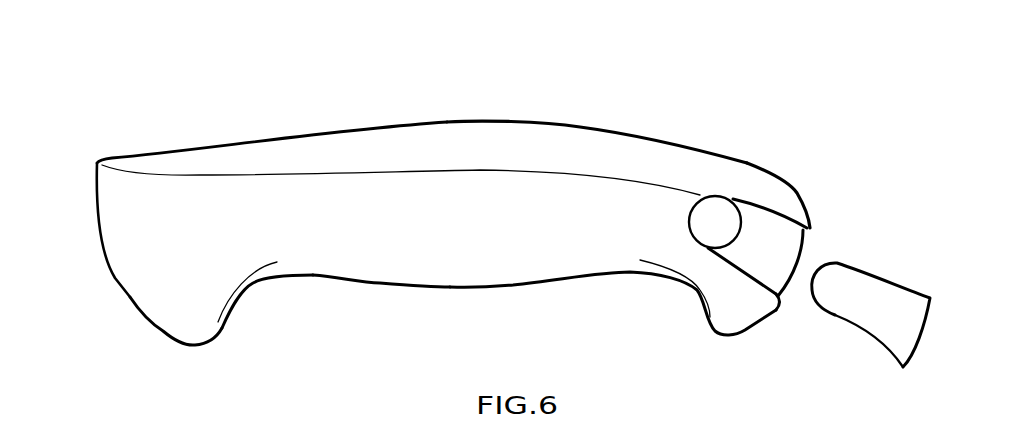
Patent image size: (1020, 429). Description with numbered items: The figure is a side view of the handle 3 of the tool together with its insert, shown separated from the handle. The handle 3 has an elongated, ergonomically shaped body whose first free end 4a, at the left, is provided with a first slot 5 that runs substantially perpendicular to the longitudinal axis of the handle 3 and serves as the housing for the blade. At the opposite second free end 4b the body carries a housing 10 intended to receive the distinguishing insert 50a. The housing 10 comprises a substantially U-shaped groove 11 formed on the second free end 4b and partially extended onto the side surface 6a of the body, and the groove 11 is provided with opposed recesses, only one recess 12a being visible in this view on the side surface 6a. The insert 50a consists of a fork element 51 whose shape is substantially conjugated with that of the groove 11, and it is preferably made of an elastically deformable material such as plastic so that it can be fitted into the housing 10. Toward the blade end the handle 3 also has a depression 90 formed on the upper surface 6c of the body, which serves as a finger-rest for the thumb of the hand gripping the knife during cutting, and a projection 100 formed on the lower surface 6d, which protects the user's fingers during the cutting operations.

The handle 3 is at (549, 304).
The first free end 4a is at (96, 152).
The second free end 4b is at (795, 166).
The first slot 5 is at (165, 332).
The side surface 6a is at (347, 153).
The upper surface 6c is at (505, 117).
The lower surface 6d is at (371, 291).
The housing 10 is at (788, 305).
The U-shaped groove 11 is at (793, 250).
The recess 12a is at (712, 215).
The distinguishing insert 50a is at (833, 338).
The fork element 51 is at (880, 293).
The depression 90 is at (190, 150).
The projection 100 is at (233, 307).